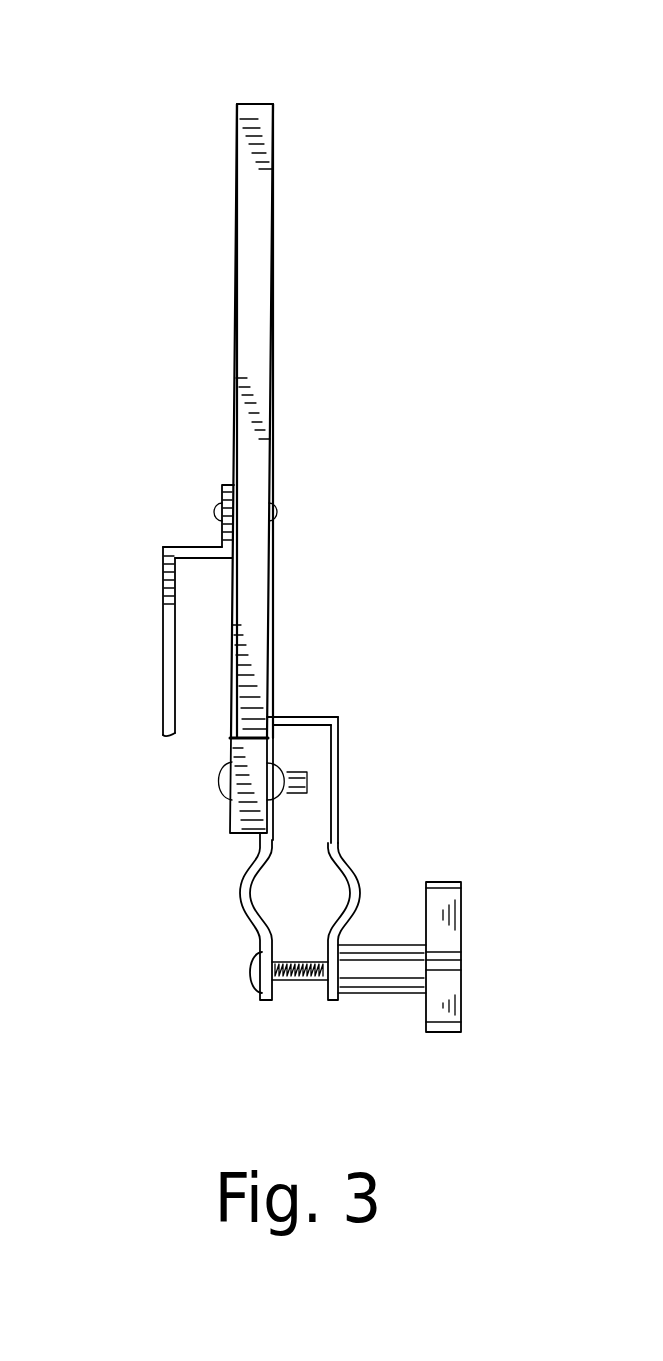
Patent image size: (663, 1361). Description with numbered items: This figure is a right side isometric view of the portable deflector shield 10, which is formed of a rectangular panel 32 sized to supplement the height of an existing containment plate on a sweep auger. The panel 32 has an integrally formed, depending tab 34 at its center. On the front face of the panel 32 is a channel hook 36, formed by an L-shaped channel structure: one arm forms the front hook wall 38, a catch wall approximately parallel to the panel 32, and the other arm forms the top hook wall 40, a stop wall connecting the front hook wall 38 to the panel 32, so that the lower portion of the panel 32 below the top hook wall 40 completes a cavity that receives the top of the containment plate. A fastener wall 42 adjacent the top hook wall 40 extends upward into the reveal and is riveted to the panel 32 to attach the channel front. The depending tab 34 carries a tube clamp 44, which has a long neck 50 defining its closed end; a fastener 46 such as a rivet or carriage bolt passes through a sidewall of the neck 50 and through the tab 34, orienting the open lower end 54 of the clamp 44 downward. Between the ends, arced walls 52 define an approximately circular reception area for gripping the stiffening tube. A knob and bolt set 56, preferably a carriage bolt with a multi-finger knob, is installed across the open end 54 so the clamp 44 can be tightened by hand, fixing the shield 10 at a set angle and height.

The portable deflector shield 10 is at (163, 131).
The panel 32 is at (262, 332).
The depending tab 34 is at (228, 835).
The channel hook 36 is at (160, 730).
The front hook wall 38 is at (160, 635).
The top hook wall 40 is at (187, 547).
The fastener wall 42 is at (222, 492).
The tube clamp 44 is at (342, 750).
The fastener 46 is at (217, 782).
The long neck 50 is at (309, 715).
The arced walls 52 is at (360, 878).
The lower end 54 is at (330, 992).
The knob and bolt set 56 is at (252, 973).